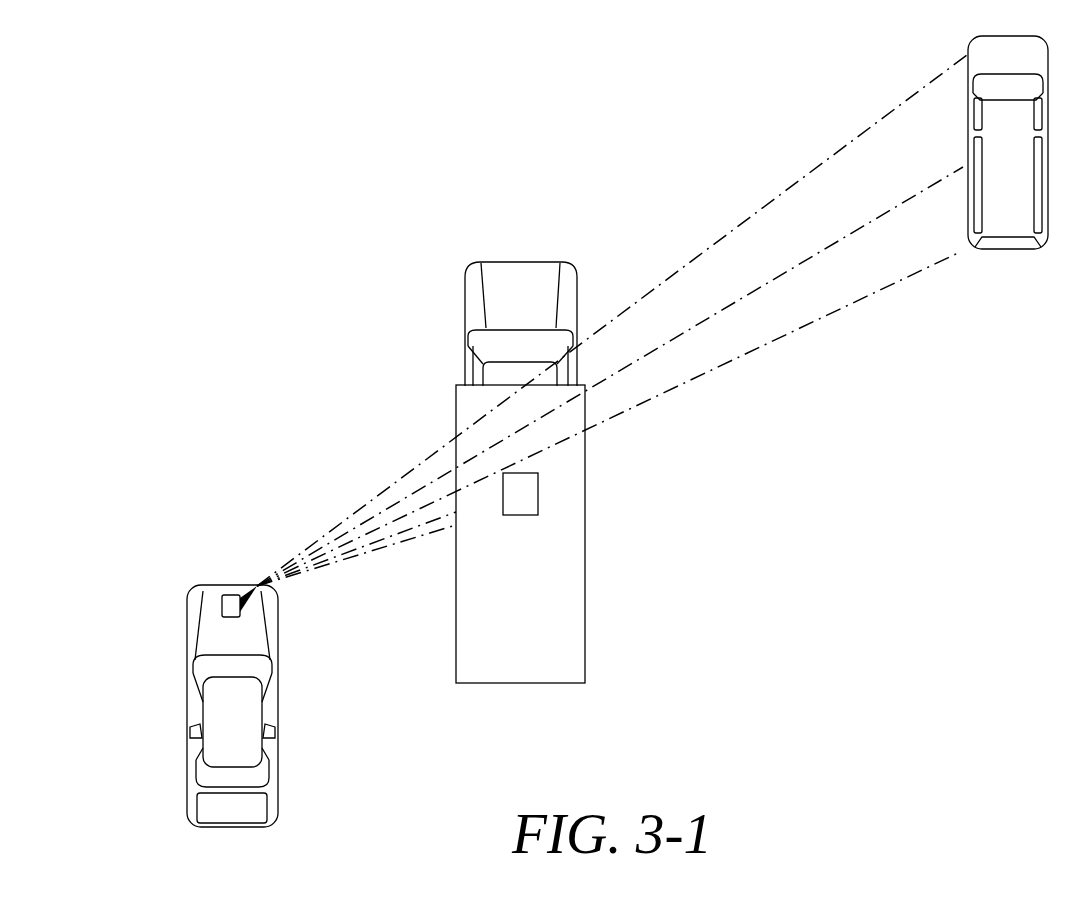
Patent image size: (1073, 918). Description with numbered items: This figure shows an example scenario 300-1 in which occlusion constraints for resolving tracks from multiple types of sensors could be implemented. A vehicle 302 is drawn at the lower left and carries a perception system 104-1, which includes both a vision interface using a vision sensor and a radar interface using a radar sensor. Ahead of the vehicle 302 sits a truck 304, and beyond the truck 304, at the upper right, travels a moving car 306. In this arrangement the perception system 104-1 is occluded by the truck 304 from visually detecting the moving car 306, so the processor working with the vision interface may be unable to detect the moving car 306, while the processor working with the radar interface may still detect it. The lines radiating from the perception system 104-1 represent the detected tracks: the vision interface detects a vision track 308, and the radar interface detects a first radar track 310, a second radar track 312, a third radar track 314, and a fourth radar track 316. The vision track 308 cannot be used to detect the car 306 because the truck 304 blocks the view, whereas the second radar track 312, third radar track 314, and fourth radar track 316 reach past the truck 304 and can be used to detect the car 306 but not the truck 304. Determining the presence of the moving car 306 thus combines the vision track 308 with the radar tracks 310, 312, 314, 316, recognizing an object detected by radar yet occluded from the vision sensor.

The example scenario 300-1 is at (157, 92).
The perception system 104-1 is at (262, 589).
The vehicle 302 is at (231, 698).
The truck 304 is at (468, 272).
The moving car 306 is at (969, 44).
The vision track 308 is at (373, 552).
The first radar track 310 is at (313, 568).
The second radar track 312 is at (904, 280).
The third radar track 314 is at (846, 238).
The fourth radar track 316 is at (760, 212).